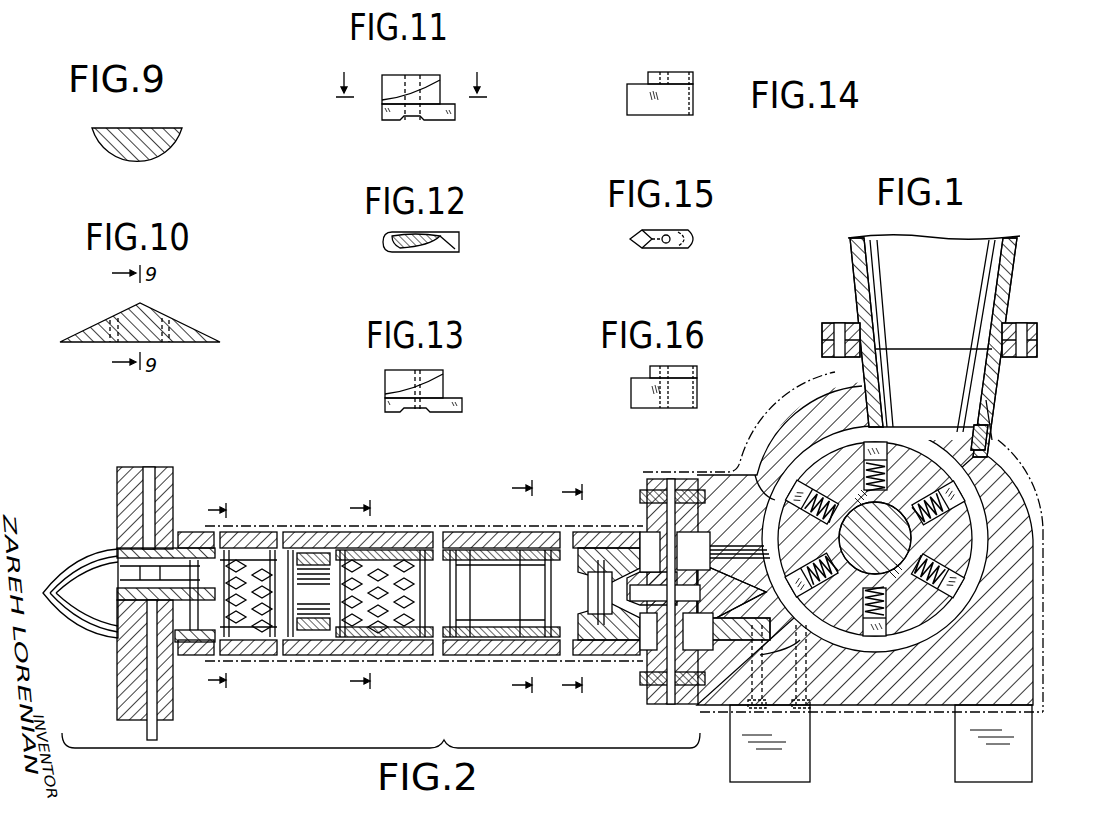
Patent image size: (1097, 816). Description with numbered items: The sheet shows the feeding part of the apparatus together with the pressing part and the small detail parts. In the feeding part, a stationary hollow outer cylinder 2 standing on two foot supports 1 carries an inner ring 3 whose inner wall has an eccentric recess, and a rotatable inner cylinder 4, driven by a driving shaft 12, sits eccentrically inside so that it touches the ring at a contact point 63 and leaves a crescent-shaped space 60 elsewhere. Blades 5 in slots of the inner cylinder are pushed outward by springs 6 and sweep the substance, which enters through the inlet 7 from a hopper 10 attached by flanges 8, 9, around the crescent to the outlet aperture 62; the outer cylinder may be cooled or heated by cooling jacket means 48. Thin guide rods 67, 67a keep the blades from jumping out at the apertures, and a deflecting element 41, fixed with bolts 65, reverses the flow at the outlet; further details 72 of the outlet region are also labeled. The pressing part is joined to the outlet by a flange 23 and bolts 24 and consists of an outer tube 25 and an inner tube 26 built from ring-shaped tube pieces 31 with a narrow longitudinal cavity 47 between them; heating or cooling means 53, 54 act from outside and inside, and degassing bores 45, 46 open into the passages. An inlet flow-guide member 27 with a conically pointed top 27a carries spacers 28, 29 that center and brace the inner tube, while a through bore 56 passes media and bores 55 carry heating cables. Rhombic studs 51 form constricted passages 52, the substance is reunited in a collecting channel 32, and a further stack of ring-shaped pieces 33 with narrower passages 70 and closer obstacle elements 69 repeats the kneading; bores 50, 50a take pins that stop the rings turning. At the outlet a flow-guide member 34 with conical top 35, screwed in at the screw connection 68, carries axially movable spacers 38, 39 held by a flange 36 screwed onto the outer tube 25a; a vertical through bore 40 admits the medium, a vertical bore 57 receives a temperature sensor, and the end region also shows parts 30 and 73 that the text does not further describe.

In FIG. 1, the foot supports 1 is at (956, 748).
In FIG. 1, the outer cylinder 2 is at (900, 706).
In FIG. 1, the inner ring 3 is at (934, 645).
In FIG. 1, the inner cylinder 4 is at (775, 640).
In FIG. 2, the inner cylinder 4 is at (580, 589).
In FIG. 1, the blades 5 is at (928, 418).
In FIG. 2, the blades 5 is at (368, 595).
In FIG. 1, the springs 6 is at (834, 596).
In FIG. 2, the springs 6 is at (225, 596).
In FIG. 1, the inlet 7 is at (994, 382).
In FIG. 2, the inlet 7 is at (530, 587).
In FIG. 1, the flange 8 is at (1037, 350).
In FIG. 1, the flange 9 is at (1035, 332).
In FIG. 1, the hopper 10 is at (1014, 266).
In FIG. 11, the driving shaft 12 is at (412, 95).
In FIG. 1, the driving shaft 12 is at (840, 536).
In FIG. 2, the flange 23 is at (686, 478).
In FIG. 2, the bolts 24 is at (650, 500).
In FIG. 2, the outer tube 25 is at (492, 532).
In FIG. 2, the outer tube 25a is at (208, 530).
In FIG. 2, the inner tube 26 is at (590, 584).
In FIG. 2, the flow-guide member 27 is at (620, 650).
In FIG. 1, the conically pointed top portion 27a is at (730, 645).
In FIG. 13, the spacer 28 is at (388, 404).
In FIG. 2, the spacer 28 is at (648, 540).
In FIG. 11, the spacer 29 is at (399, 110).
In FIG. 12, the spacer 29 is at (395, 243).
In FIG. 2, the spacer 29 is at (636, 665).
In FIG. 2, the end cap 30 is at (192, 532).
In FIG. 2, the ring-shaped tube pieces 31 is at (466, 640).
In FIG. 2, the collecting channel 32 is at (338, 640).
In FIG. 2, the ring-shaped pieces 33 is at (258, 640).
In FIG. 2, the flow-guide member 34 is at (194, 645).
In FIG. 2, the conically pointed top portion 35 is at (72, 604).
In FIG. 2, the flange 36 is at (118, 512).
In FIG. 16, the spacer 38 is at (632, 390).
In FIG. 2, the spacer 38 is at (176, 690).
In FIG. 14, the spacer 39 is at (693, 94).
In FIG. 15, the spacer 39 is at (636, 231).
In FIG. 2, the vertical through bore 40 is at (148, 730).
In FIG. 9, the deflecting element 41 is at (92, 131).
In FIG. 10, the deflecting element 41 is at (82, 338).
In FIG. 2, the degassing bores 45 is at (596, 532).
In FIG. 2, the degassing bores 46 is at (540, 532).
In FIG. 2, the longitudinal cavity 47 is at (538, 640).
In FIG. 1, the cooling jacket means 48 is at (838, 715).
In FIG. 2, the bore 50 is at (458, 552).
In FIG. 2, the bore 50a is at (510, 640).
In FIG. 2, the rhombic studs 51 is at (392, 562).
In FIG. 2, the constricted passages 52 is at (340, 560).
In FIG. 2, the heating/cooling means 53 is at (452, 640).
In FIG. 2, the heating/cooling means 54 is at (502, 640).
In FIG. 2, the bores 55 is at (669, 706).
In FIG. 2, the through bore 56 is at (664, 494).
In FIG. 2, the vertical bore 57 is at (145, 490).
In FIG. 1, the crescent-shaped space 60 is at (998, 455).
In FIG. 1, the outlet aperture 62 is at (742, 546).
In FIG. 1, the contact point 63 is at (778, 492).
In FIG. 10, the bolts 65 is at (165, 318).
In FIG. 1, the bolts 65 is at (754, 708).
In FIG. 1, the guide rod 67 is at (735, 615).
In FIG. 1, the guide rod 67a is at (990, 440).
In FIG. 2, the screw connection 68 is at (125, 588).
In FIG. 2, the obstacle elements 69 is at (240, 598).
In FIG. 2, the narrower passages 70 is at (248, 560).
In FIG. 1, the outlet 72 is at (800, 648).
In FIG. 2, the seal 73 is at (122, 552).